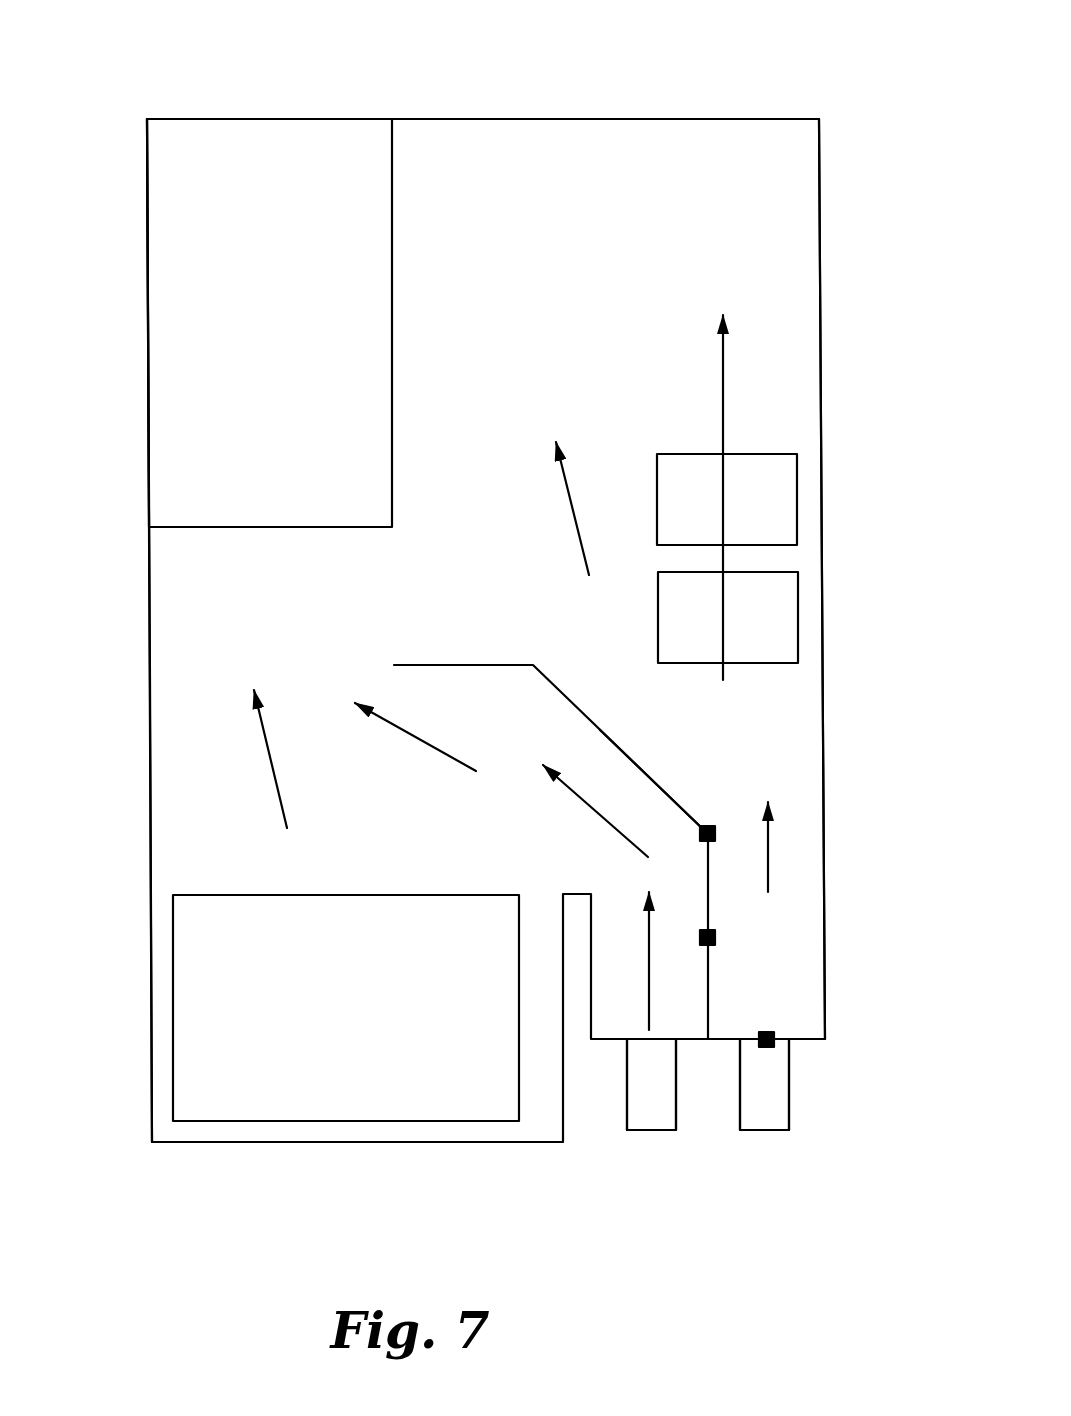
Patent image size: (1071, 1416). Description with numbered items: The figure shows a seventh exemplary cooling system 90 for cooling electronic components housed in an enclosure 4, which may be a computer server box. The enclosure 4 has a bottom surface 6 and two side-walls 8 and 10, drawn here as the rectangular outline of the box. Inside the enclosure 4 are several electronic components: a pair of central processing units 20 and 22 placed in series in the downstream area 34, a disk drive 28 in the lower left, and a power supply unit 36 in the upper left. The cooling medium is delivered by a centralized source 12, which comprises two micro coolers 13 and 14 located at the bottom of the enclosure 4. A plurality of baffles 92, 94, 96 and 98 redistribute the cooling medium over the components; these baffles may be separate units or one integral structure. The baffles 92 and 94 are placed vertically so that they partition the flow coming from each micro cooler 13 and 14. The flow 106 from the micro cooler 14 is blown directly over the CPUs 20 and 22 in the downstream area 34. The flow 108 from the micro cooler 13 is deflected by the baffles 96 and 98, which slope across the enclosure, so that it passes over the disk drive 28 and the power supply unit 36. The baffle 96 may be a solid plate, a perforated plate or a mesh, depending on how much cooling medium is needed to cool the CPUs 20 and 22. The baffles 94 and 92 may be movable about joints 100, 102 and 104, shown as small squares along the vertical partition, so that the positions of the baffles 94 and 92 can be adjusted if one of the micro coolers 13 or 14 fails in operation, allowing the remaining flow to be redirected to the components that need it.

The cooling system 90 is at (790, 72).
The enclosure 4 is at (598, 118).
The side-wall 8 is at (820, 291).
The bottom surface 6 is at (166, 571).
The side-wall 10 is at (150, 680).
The power supply unit 36 is at (178, 401).
The downstream area 34 is at (680, 393).
The central processing unit 22 is at (775, 515).
The central processing unit 20 is at (770, 625).
The baffle 98 is at (463, 663).
The baffle 96 is at (650, 776).
The joint 100 is at (714, 828).
The flow 106 is at (770, 835).
The baffle 94 is at (708, 908).
The joint 102 is at (715, 937).
The baffle 92 is at (708, 986).
The joint 104 is at (770, 1046).
The flow 108 is at (649, 998).
The disk drive 28 is at (238, 1103).
The micro cooler 13 is at (664, 1130).
The micro cooler 14 is at (760, 1130).
The centralized source 12 is at (667, 1198).